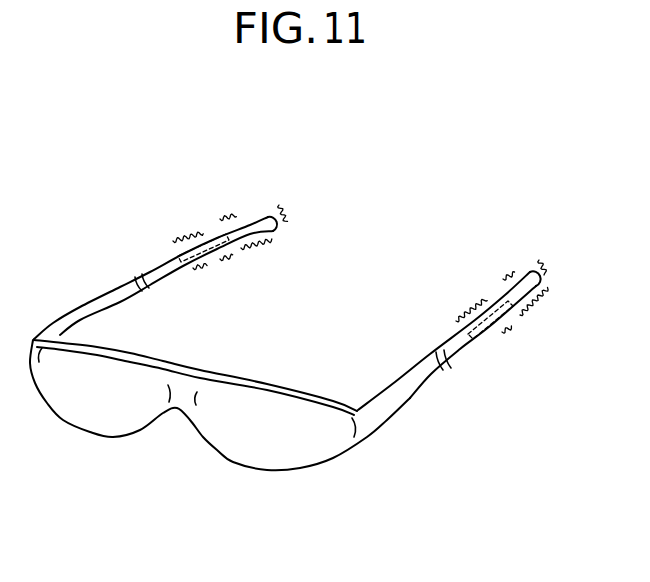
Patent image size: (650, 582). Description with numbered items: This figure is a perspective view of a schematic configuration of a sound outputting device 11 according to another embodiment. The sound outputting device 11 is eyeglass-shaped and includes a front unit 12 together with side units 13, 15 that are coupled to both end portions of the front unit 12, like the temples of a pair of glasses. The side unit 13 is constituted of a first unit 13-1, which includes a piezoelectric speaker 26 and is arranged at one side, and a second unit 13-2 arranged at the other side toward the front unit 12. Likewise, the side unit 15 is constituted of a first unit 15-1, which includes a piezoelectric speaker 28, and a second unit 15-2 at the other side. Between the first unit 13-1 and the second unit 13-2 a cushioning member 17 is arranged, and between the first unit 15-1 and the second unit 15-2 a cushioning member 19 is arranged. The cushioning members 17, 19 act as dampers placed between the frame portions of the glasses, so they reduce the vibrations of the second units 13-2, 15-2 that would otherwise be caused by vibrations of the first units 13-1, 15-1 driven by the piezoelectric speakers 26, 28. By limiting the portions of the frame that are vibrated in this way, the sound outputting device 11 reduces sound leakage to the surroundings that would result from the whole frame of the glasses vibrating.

The sound outputting device 11 is at (123, 141).
The front unit 12 is at (247, 450).
The side unit 13 is at (423, 360).
The first unit 13-1 is at (527, 280).
The second unit 13-2 is at (398, 393).
The side unit 15 is at (118, 280).
The first unit 15-1 is at (255, 227).
The second unit 15-2 is at (90, 305).
The cushioning member 17 is at (450, 360).
The cushioning member 19 is at (146, 290).
The piezoelectric speaker 26 is at (500, 300).
The piezoelectric speaker 28 is at (217, 237).